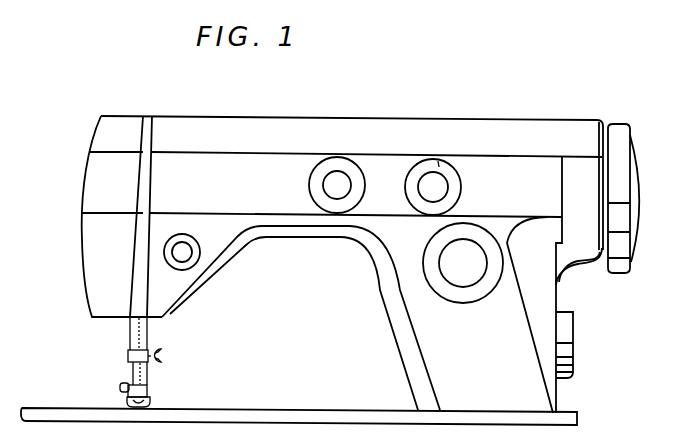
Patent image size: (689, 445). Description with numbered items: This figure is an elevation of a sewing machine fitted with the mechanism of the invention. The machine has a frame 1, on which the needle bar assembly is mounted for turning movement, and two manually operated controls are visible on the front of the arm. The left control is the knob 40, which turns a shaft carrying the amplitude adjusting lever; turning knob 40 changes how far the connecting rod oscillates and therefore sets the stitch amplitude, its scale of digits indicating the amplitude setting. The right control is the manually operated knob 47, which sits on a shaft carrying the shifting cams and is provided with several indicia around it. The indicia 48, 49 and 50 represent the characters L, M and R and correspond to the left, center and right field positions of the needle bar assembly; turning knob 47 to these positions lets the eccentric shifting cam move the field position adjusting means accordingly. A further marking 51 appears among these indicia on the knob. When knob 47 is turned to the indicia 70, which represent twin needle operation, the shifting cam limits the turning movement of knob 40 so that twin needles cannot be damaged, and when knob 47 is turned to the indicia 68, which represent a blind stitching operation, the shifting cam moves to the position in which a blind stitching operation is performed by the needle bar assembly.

The frame 1 is at (223, 183).
The knob 40 is at (333, 193).
The manually operated knob 47 is at (455, 180).
The indicium L 48 is at (417, 172).
The indicium M 49 is at (428, 167).
The indicium R 50 is at (453, 166).
The dial index mark 51 is at (438, 166).
The indicia 68 is at (437, 185).
The indicia 70 is at (407, 182).